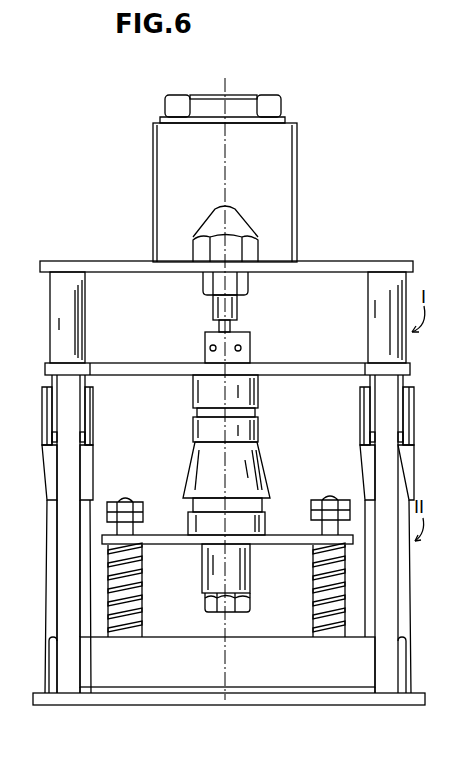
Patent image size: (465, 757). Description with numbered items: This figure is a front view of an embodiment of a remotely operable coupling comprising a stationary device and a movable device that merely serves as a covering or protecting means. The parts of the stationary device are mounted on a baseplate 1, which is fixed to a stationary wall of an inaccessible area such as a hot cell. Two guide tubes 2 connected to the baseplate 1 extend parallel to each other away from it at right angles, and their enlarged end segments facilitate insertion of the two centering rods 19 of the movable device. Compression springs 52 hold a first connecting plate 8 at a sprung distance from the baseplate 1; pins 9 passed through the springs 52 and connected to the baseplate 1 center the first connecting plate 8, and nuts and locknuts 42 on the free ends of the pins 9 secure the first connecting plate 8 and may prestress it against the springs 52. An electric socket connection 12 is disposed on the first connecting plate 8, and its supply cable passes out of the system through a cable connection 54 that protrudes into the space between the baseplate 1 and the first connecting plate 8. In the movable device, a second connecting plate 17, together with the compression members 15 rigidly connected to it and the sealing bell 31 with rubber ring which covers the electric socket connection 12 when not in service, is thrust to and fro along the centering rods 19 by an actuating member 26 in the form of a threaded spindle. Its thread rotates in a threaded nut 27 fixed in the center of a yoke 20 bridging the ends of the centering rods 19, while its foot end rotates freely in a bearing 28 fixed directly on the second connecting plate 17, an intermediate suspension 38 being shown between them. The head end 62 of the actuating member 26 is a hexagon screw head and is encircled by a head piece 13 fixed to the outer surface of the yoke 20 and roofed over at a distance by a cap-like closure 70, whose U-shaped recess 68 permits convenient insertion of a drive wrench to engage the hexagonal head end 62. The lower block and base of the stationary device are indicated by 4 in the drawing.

The baseplate 1 is at (92, 698).
The guide tube 2 is at (96, 452).
The lower block 4 is at (283, 675).
The first connecting plate 8 is at (279, 545).
The pin 9 is at (146, 590).
The electric socket connection 12 is at (190, 506).
The head piece 13 is at (287, 146).
The compression member 15 is at (68, 522).
The second connecting plate 17 is at (146, 377).
The centering rod 19 is at (62, 287).
The yoke 20 is at (386, 271).
The actuating member 26 is at (238, 306).
The threaded nut 27 is at (212, 286).
The bearing 28 is at (250, 347).
The sealing bell 31 is at (255, 462).
The intermediate suspension 38 is at (250, 395).
The nuts and locknuts 42 is at (322, 500).
The compression spring 52 is at (138, 587).
The cable connection 54 is at (230, 615).
The head end 62 is at (255, 238).
The U-shaped recess 68 is at (233, 94).
The cap-like closure 70 is at (278, 97).